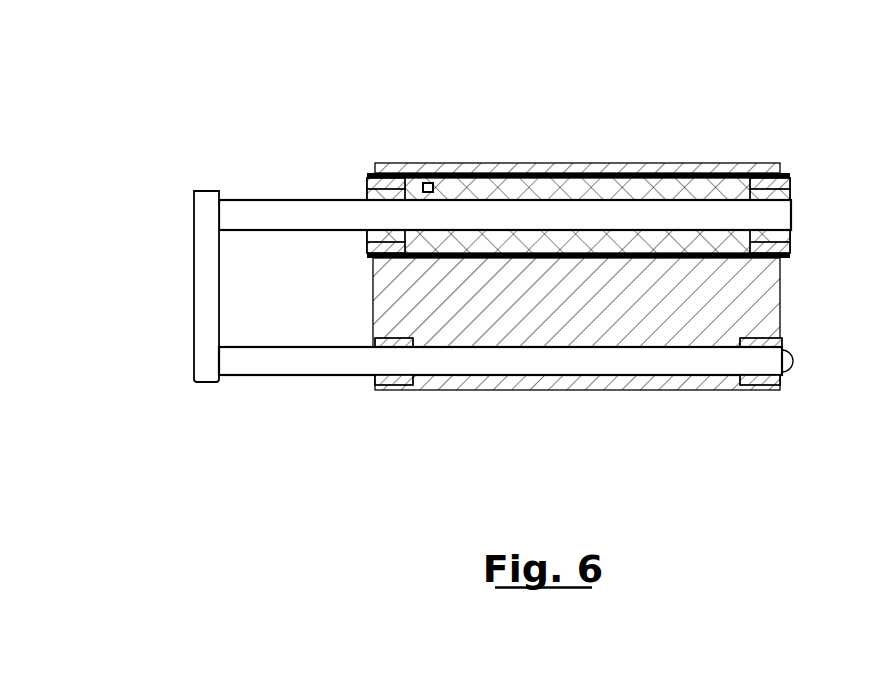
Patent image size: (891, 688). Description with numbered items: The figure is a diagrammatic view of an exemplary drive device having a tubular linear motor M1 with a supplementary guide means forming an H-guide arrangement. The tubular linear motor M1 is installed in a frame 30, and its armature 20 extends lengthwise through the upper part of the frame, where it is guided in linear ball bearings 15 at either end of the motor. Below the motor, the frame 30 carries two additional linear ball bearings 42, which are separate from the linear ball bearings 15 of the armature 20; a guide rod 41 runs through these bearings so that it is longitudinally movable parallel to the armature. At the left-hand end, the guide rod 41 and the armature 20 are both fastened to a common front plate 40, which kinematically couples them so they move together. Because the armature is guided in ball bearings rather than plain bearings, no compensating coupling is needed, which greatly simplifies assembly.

The tubular linear motor M1 is at (607, 163).
The linear ball bearings 15 is at (362, 193).
The armature 20 is at (313, 217).
The frame 30 is at (763, 303).
The front plate 40 is at (205, 278).
The guide rod 41 is at (273, 365).
The additional linear ball bearings 42 is at (388, 392).